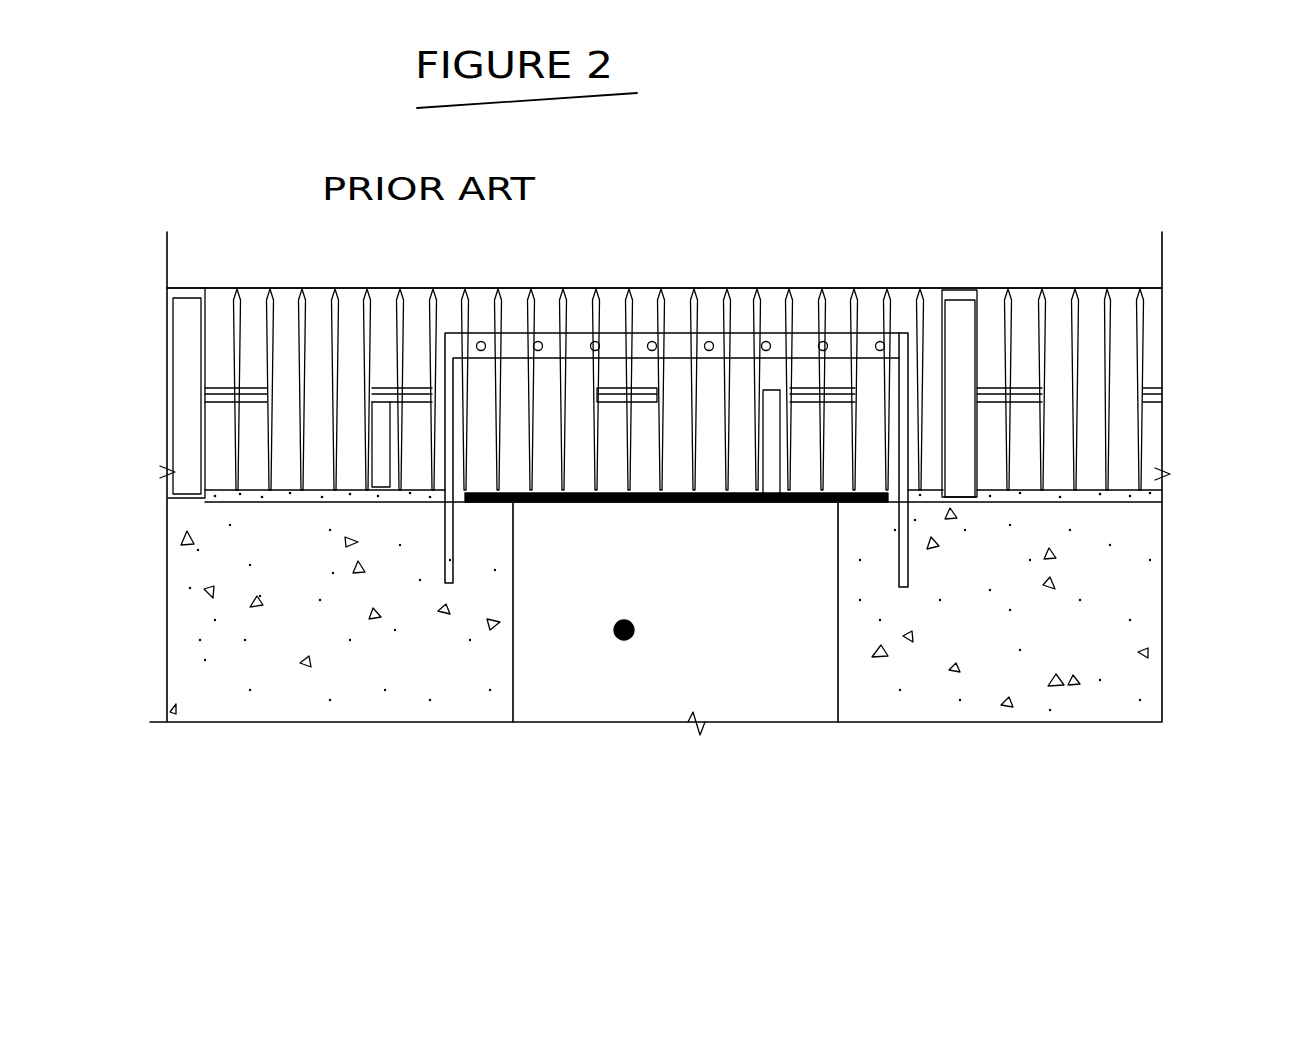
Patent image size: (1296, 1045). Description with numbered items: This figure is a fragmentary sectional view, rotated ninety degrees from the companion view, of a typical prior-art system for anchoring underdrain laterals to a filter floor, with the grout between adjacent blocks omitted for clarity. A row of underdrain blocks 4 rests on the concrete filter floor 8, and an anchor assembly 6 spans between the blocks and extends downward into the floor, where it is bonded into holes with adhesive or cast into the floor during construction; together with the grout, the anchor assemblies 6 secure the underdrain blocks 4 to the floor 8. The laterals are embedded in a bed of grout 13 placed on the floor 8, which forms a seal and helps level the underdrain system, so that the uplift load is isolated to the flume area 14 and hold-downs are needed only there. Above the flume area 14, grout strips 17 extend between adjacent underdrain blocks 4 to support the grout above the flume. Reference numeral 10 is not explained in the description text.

The underdrain block 4 is at (725, 288).
The anchor assembly 6 is at (578, 332).
The filter floor 8 is at (1060, 507).
The stud 10 is at (226, 390).
The bed of grout 13 is at (311, 494).
The flume area 14 is at (634, 638).
The grout strip 17 is at (612, 502).